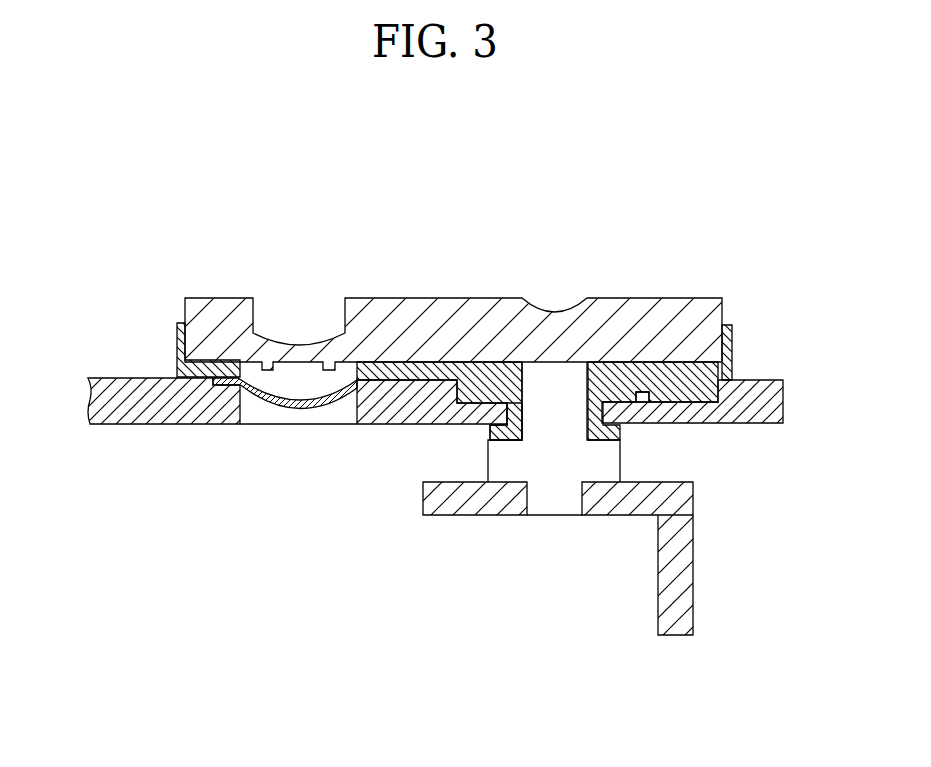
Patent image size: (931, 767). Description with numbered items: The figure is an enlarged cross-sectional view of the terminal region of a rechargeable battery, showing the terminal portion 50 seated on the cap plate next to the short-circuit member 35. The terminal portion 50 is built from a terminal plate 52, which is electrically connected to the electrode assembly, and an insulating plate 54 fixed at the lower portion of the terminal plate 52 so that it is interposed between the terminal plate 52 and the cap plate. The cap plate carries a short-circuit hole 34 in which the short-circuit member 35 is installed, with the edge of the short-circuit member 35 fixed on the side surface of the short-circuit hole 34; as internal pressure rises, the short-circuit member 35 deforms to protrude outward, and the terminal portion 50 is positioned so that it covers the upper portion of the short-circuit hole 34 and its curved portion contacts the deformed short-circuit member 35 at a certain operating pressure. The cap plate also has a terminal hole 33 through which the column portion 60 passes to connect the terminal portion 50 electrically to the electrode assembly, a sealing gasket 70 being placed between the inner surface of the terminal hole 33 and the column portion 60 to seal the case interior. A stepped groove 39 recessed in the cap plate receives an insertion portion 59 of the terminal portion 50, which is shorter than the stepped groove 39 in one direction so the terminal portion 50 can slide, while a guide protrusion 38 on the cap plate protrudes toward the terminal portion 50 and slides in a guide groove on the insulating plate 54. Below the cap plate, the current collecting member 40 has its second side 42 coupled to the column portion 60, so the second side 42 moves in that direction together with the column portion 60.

The terminal portion 50 is at (208, 247).
The terminal plate 52 is at (210, 323).
The insulating plate 54 is at (180, 367).
The short-circuit hole 34 is at (237, 412).
The short-circuit member 35 is at (297, 409).
The insertion portion 59 is at (468, 383).
The sealing gasket 70 is at (513, 412).
The terminal hole 33 is at (600, 410).
The column portion 60 is at (560, 333).
The stepped groove 39 is at (737, 378).
The guide protrusion 38 is at (645, 402).
The second side 42 is at (447, 500).
The current collecting member 40 is at (601, 558).